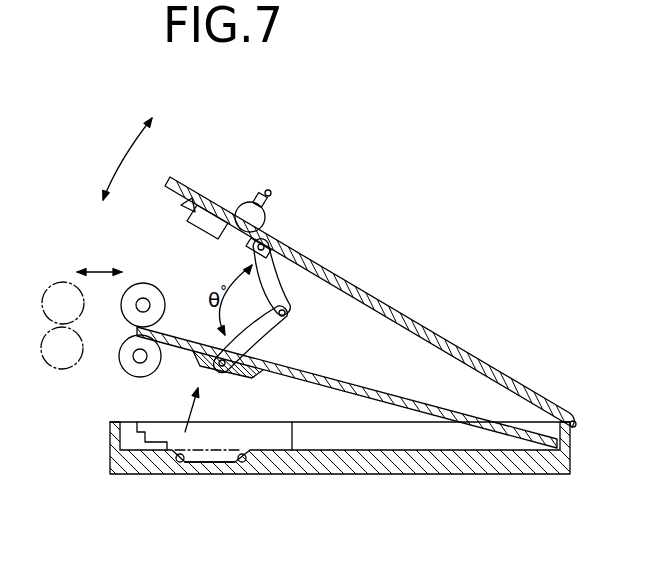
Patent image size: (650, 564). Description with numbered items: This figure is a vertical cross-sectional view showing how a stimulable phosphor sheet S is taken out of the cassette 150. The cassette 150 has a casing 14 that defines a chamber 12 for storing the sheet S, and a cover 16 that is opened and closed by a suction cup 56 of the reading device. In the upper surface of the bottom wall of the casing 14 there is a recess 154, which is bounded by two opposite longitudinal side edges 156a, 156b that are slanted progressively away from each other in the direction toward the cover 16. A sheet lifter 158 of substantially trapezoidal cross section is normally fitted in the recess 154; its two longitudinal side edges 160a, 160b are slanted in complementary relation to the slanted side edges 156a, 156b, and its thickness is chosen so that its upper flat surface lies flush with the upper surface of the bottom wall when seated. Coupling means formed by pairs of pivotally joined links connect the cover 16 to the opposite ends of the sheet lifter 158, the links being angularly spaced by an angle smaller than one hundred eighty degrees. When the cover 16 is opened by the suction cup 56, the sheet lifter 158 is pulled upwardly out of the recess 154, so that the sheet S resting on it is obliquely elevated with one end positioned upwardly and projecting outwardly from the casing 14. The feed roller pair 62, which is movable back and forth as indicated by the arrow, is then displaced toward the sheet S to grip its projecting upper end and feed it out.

The cover 16 is at (495, 362).
The cassette 150 is at (448, 297).
The suction cup 56 is at (270, 193).
The feed roller pair 62 is at (147, 300).
The stimulable phosphor sheet S is at (415, 398).
The longitudinal side edge of the sheet lifter 160a is at (262, 369).
The longitudinal side edge of the sheet lifter 160b is at (187, 352).
The sheet lifter 158 is at (237, 375).
The casing 14 is at (330, 472).
The chamber 12 is at (413, 440).
The recess 154 is at (218, 458).
The longitudinal side edge of the recess 156b is at (178, 462).
The longitudinal side edge of the recess 156a is at (238, 462).